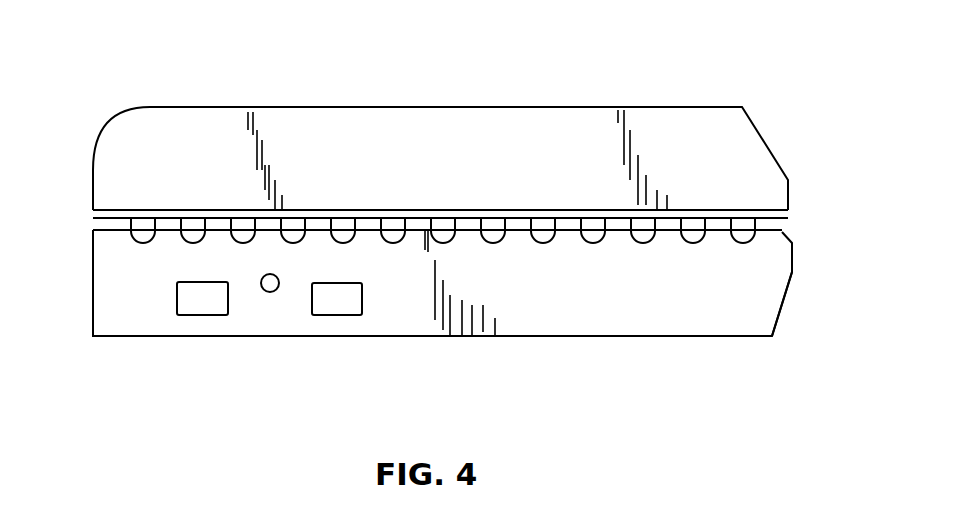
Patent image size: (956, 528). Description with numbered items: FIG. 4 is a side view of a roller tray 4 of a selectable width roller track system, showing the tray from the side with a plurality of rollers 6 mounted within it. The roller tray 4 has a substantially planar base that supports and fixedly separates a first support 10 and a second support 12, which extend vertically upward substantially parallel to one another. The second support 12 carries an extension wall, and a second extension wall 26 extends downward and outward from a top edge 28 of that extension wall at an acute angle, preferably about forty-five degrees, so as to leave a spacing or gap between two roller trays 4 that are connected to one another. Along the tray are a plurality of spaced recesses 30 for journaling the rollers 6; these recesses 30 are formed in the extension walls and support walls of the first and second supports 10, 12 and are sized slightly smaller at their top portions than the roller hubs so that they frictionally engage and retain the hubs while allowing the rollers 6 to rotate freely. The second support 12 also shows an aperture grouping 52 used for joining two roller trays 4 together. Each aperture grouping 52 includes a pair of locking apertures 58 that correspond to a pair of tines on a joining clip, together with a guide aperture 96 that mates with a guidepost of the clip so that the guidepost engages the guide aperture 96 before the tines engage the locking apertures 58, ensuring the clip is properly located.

The roller tray 4 is at (799, 277).
The rollers 6 is at (660, 340).
The first support 10 is at (735, 161).
The second support 12 is at (744, 304).
The second extension wall 26 is at (352, 122).
The top edge 28 is at (790, 220).
The spaced recesses 30 is at (548, 246).
The aperture grouping 52 is at (299, 312).
The apertures 58 is at (205, 282).
The guide aperture 96 is at (270, 274).